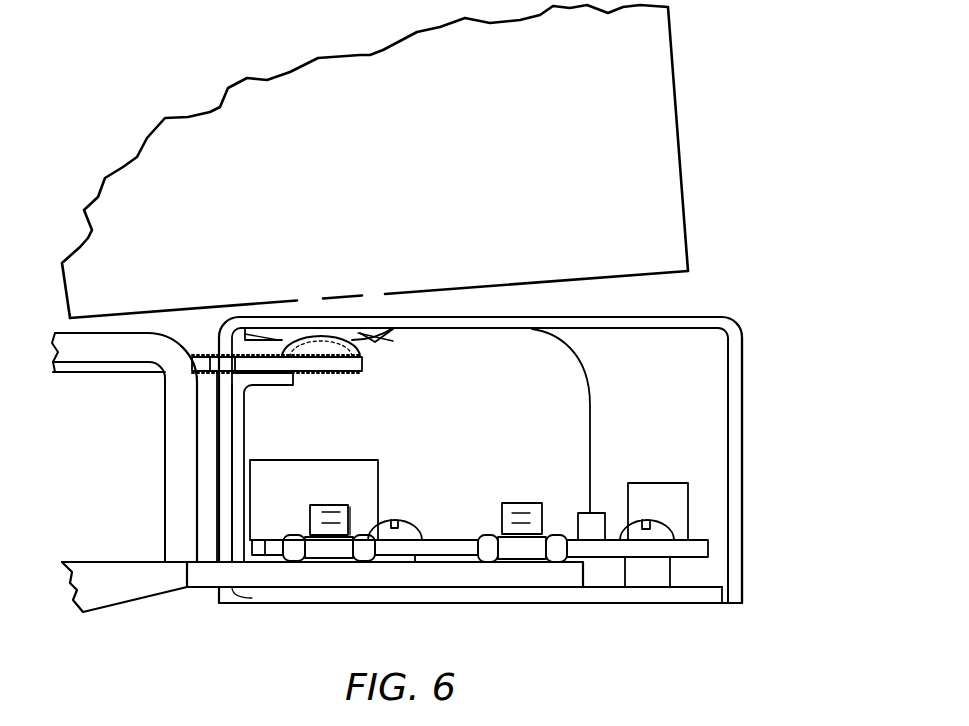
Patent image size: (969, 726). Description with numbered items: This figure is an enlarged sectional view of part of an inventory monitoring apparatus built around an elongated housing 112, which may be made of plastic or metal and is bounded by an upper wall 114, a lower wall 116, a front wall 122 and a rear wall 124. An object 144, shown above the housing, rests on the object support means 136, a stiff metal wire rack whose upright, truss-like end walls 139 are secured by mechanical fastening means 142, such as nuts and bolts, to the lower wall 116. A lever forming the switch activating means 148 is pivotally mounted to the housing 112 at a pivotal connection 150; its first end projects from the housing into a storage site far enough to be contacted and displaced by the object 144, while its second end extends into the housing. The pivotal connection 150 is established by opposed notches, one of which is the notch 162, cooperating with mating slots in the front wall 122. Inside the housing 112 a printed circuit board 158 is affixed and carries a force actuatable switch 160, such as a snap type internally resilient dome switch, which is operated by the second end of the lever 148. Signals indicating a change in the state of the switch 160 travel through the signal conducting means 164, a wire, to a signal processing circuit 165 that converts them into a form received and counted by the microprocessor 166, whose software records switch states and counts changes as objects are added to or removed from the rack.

The housing 112 is at (743, 437).
The upper wall 114 is at (677, 320).
The lower wall 116 is at (415, 604).
The front wall 122 is at (222, 445).
The rear wall 124 is at (735, 382).
The object support means 136 is at (100, 613).
The end walls 139 is at (212, 578).
The mechanical fastening means 142 is at (327, 552).
The object 144 is at (652, 163).
The switch activating means 148 is at (93, 372).
The pivotal connection 150 is at (216, 355).
The printed circuit board 158 is at (378, 336).
The force actuatable switch 160 is at (376, 343).
The notch 162 is at (215, 383).
The signal conducting means 164 is at (588, 378).
The signal processing circuit 165 is at (587, 511).
The microprocessor 166 is at (652, 483).